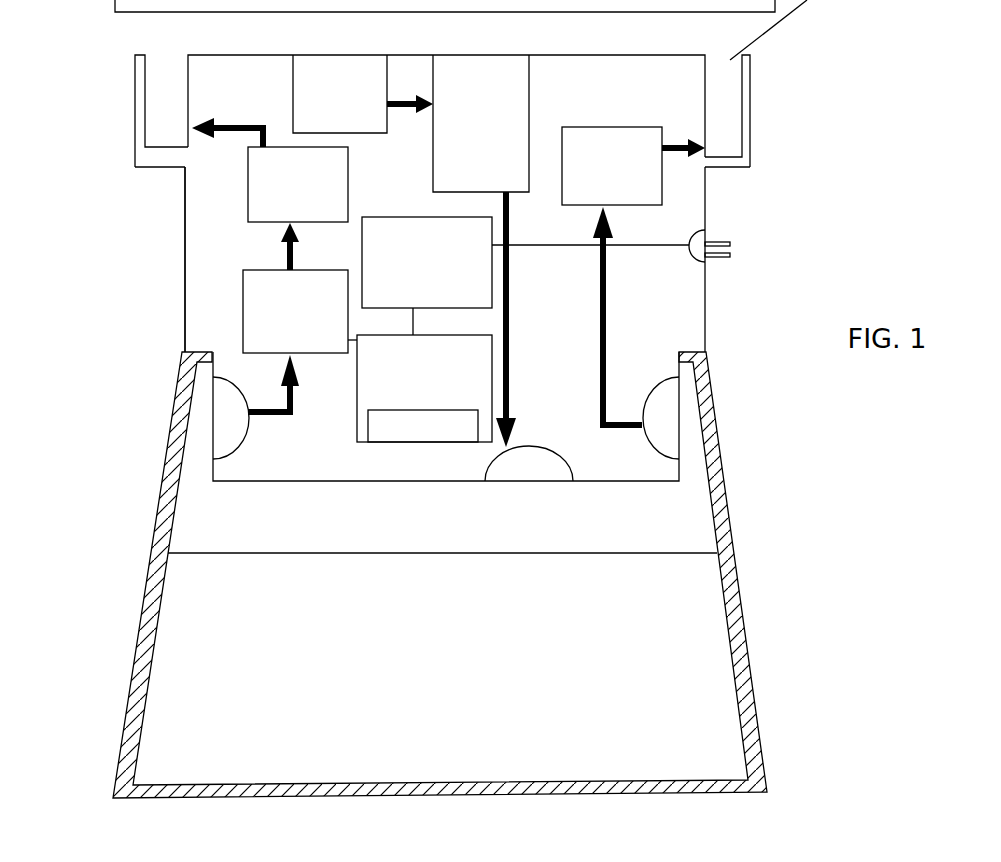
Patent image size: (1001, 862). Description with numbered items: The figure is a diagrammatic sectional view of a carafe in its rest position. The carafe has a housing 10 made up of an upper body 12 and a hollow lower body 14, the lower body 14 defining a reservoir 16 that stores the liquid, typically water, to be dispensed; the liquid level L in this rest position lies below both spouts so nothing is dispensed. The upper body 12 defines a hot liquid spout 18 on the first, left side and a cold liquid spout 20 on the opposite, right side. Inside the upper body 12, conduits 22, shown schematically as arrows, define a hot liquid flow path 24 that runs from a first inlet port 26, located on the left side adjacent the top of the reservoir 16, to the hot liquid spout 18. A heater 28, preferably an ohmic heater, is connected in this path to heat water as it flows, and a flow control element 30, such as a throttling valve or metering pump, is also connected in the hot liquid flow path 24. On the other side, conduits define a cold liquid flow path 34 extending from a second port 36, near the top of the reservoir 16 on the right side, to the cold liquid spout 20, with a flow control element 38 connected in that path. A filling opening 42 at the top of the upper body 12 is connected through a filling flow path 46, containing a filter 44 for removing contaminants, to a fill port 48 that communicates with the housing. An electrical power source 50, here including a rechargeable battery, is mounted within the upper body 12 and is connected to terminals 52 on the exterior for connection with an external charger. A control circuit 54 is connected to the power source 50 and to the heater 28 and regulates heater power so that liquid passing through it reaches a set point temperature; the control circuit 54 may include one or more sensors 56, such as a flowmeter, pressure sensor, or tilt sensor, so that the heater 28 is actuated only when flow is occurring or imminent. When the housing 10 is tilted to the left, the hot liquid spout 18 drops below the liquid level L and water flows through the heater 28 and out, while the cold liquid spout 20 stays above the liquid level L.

The housing 10 is at (840, 313).
The upper body 12 is at (768, 178).
The lower body 14 is at (745, 496).
The reservoir 16 is at (670, 518).
The hot liquid spout 18 is at (165, 65).
The cold liquid spout 20 is at (727, 111).
The conduits 22 is at (240, 125).
The hot liquid flow path 24 is at (186, 232).
The first inlet port 26 is at (232, 438).
The heater 28 is at (243, 298).
The flow control element 30 is at (248, 190).
The cold liquid flow path 34 is at (625, 271).
The second port 36 is at (665, 428).
The flow control element 38 is at (622, 143).
The filling opening 42 is at (358, 103).
The filter 44 is at (493, 85).
The filling flow path 46 is at (508, 270).
The fill port 48 is at (535, 447).
The electrical power source 50 is at (388, 240).
The terminals 52 is at (716, 240).
The control circuit 54 is at (365, 393).
The sensors 56 is at (405, 435).
The liquid level L is at (517, 553).